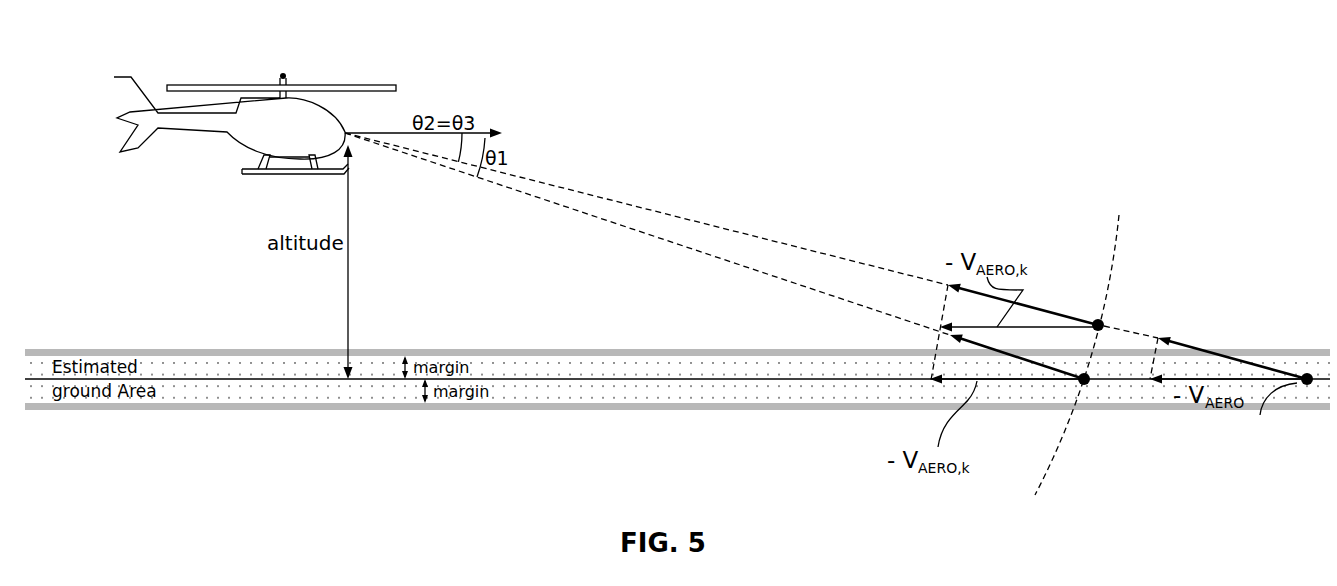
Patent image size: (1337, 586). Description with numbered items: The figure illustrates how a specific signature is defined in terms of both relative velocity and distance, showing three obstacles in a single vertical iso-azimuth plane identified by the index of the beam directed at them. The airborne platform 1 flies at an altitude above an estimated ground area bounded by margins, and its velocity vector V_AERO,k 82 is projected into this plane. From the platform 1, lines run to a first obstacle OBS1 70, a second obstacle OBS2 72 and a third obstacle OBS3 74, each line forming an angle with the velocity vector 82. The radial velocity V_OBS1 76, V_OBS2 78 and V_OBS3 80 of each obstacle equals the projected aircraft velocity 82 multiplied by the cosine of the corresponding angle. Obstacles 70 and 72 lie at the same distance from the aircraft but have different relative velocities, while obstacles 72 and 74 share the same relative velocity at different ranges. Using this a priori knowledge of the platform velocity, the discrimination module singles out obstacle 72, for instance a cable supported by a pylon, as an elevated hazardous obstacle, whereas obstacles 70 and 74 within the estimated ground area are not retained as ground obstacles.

The airborne platform 1 is at (133, 142).
The obstacle OBS1 70 is at (1090, 381).
The obstacle OBS2 72 is at (1100, 326).
The obstacle OBS3 74 is at (1274, 423).
The radial velocity V_OBS1 76 is at (1046, 368).
The radial velocity V_OBS2 78 is at (1067, 315).
The radial velocity V_OBS3 80 is at (1232, 337).
The aircraft velocity vector V_AERO,k 82 is at (465, 131).